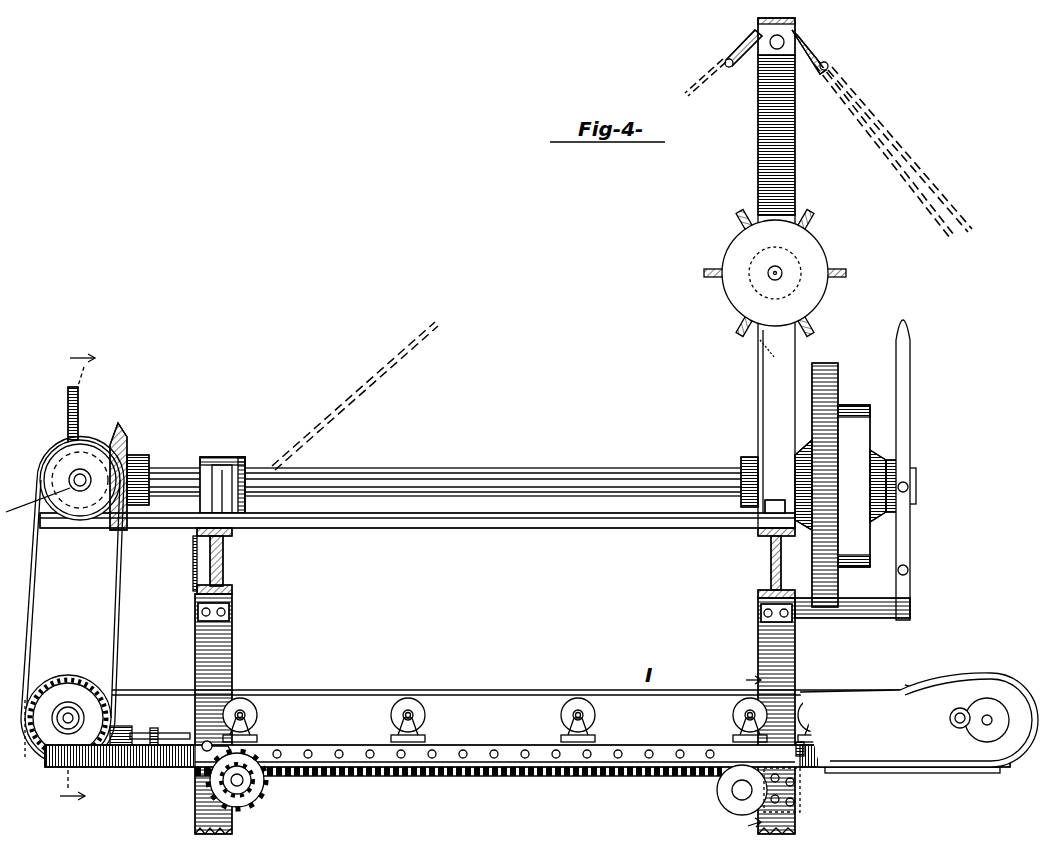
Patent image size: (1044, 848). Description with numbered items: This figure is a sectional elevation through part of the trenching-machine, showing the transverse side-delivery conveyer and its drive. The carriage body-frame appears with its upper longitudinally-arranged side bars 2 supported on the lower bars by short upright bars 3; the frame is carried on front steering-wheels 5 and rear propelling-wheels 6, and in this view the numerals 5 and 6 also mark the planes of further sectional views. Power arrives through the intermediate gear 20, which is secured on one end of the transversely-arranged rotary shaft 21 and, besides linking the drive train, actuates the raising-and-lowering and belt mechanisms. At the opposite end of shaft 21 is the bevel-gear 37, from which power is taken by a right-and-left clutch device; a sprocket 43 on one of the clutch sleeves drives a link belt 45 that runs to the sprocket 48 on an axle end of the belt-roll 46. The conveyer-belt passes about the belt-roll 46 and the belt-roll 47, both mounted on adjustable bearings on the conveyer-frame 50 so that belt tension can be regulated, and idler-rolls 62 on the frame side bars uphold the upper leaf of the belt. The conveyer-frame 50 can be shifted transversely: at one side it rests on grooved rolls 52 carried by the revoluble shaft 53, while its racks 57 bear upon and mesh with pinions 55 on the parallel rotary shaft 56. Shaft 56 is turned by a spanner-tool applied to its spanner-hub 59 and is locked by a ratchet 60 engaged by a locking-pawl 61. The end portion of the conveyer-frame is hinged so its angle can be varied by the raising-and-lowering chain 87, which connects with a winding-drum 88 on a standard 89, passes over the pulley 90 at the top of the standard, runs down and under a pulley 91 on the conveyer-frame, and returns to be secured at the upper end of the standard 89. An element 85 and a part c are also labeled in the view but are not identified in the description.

The upper longitudinally-arranged side bars 2 is at (221, 553).
The upright bars 3 is at (227, 642).
The front steering-wheels 5 is at (76, 578).
The rear propelling-wheels 6 is at (748, 744).
The intermediate gear 20 is at (855, 470).
The transversely-arranged rotary shaft 21 is at (517, 470).
The bevel-gear 37 is at (130, 431).
The sprocket 43 is at (62, 460).
The link belt 45 is at (121, 612).
The belt-roll 46 is at (70, 674).
The belt-roll 47 is at (972, 692).
The sprocket 48 is at (44, 718).
The conveyer-frame 50 is at (497, 752).
The grooved rolls 52 is at (735, 801).
The revoluble shaft 53 is at (732, 790).
The pinions 55 is at (194, 811).
The rotary shaft 56 is at (232, 781).
The racks 57 is at (360, 773).
The spanner-hub 59 is at (256, 790).
The ratchet 60 is at (263, 776).
The locking-pawl 61 is at (234, 700).
The idler-rolls 62 is at (408, 700).
The stop 85 is at (806, 768).
The raising-and-lowering chain 87 is at (897, 153).
The winding-drum 88 is at (812, 299).
The standard 89 is at (760, 146).
The pulley 90 is at (757, 24).
The pulley 91 is at (980, 703).
The shaft c is at (35, 507).